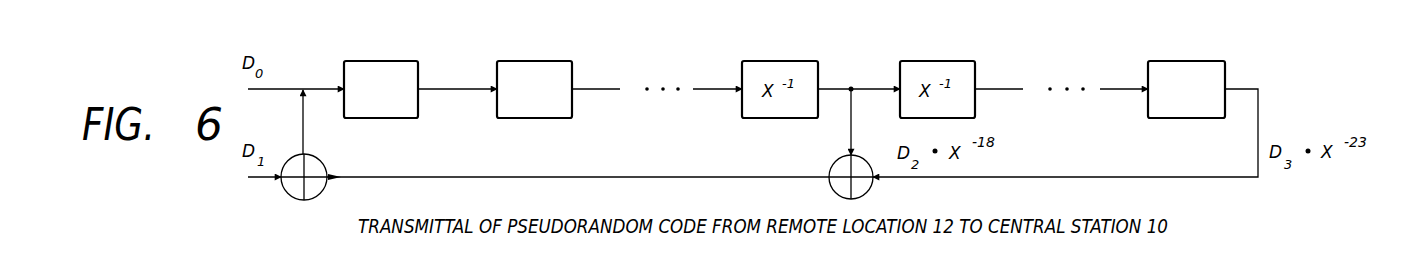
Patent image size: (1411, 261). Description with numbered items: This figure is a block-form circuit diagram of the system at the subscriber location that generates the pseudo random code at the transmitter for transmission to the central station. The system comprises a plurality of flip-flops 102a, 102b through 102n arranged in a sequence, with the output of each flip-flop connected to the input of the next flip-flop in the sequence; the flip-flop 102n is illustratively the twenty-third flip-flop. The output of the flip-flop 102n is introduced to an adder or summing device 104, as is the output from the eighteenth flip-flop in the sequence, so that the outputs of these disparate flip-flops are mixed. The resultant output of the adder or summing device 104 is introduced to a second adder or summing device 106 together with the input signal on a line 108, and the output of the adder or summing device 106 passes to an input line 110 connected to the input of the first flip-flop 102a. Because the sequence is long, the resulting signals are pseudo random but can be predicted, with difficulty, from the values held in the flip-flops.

The flip-flop 102a is at (412, 60).
The flip-flop 102b is at (560, 60).
The flip-flop 102n is at (1215, 60).
The adder or summing device 104 is at (832, 194).
The adder or summing device 106 is at (320, 193).
The line 108 is at (272, 181).
The input line 110 is at (316, 88).